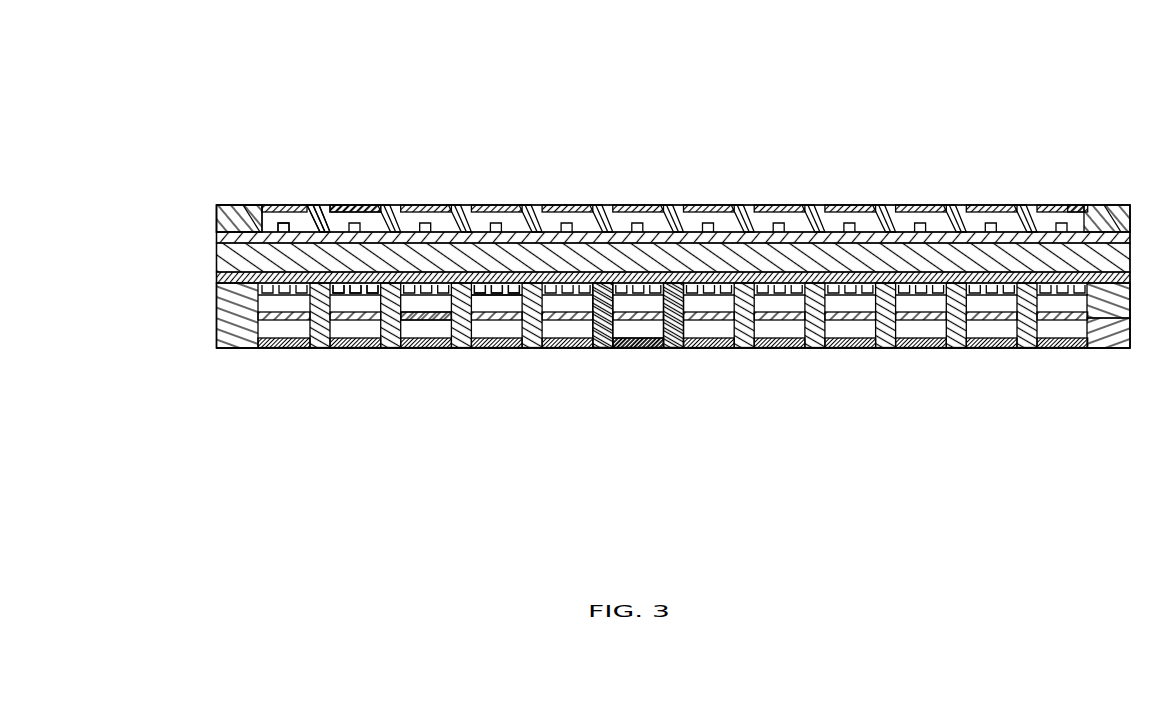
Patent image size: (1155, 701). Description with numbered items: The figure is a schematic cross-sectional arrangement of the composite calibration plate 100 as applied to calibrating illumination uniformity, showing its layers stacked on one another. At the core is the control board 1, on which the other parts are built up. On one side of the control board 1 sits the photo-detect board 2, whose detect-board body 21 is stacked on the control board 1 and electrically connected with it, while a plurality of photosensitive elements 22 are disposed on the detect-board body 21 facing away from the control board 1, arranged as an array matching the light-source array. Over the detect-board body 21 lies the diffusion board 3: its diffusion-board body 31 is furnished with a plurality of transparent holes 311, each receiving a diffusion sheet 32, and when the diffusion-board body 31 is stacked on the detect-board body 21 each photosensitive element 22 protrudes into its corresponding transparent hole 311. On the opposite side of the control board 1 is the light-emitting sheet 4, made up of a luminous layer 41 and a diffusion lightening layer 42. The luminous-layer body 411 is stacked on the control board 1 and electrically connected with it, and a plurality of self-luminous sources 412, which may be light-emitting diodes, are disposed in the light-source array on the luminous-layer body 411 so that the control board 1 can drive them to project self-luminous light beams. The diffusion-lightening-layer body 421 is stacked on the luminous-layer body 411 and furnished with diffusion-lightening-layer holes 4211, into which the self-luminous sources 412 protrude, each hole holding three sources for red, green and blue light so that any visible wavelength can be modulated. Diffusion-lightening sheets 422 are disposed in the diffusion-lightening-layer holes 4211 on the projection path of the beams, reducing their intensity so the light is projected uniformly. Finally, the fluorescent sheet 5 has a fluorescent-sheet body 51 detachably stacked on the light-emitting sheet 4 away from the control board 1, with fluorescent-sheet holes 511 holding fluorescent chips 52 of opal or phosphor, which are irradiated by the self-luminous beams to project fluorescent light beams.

The composite calibration plate 100 is at (350, 94).
The control board 1 is at (217, 256).
The photo-detect board 2 is at (217, 237).
The detect-board body 21 is at (250, 218).
The photosensitive element 22 is at (282, 216).
The diffusion board 3 is at (217, 215).
The diffusion-board body 31 is at (331, 205).
The transparent hole 311 is at (311, 217).
The diffusion sheet 32 is at (303, 206).
The light-emitting sheet 4 is at (153, 261).
The luminous layer 41 is at (217, 277).
The luminous-layer body 411 is at (386, 292).
The self-luminous source 412 is at (497, 292).
The diffusion lightening layer 42 is at (217, 300).
The diffusion-lightening-layer body 421 is at (245, 308).
The diffusion-lightening-layer hole 4211 is at (517, 305).
The diffusion-lightening sheet 422 is at (417, 316).
The fluorescent sheet 5 is at (217, 333).
The fluorescent-sheet body 51 is at (605, 345).
The fluorescent chip 52 is at (643, 348).
The fluorescent-sheet hole 511 is at (663, 350).